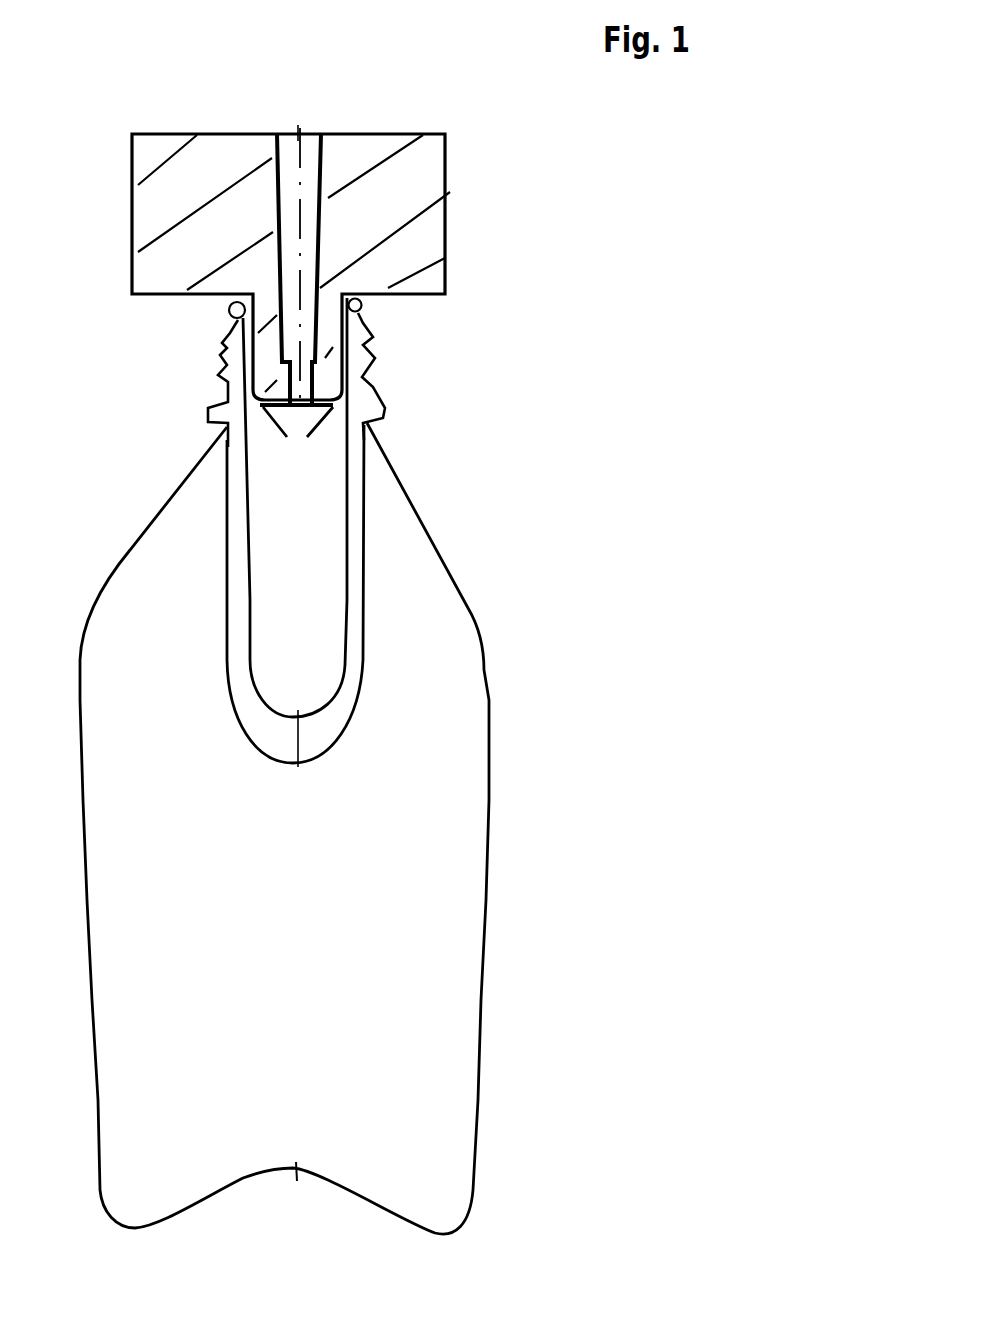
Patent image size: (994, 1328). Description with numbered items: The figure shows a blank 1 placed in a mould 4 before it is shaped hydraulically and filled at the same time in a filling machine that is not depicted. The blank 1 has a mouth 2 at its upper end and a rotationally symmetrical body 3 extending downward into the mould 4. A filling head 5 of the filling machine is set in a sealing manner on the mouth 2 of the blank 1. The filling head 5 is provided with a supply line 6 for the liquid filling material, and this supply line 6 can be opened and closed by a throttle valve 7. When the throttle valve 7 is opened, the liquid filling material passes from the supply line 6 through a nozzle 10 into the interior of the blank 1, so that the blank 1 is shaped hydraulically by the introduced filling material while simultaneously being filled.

The blank 1 is at (235, 570).
The mouth 2 is at (362, 348).
The rotationally symmetrical body 3 is at (347, 693).
The mould 4 is at (482, 1053).
The filling head 5 is at (405, 207).
The supply line 6 is at (290, 187).
The throttle valve 7 is at (318, 406).
The nozzle 10 is at (312, 429).